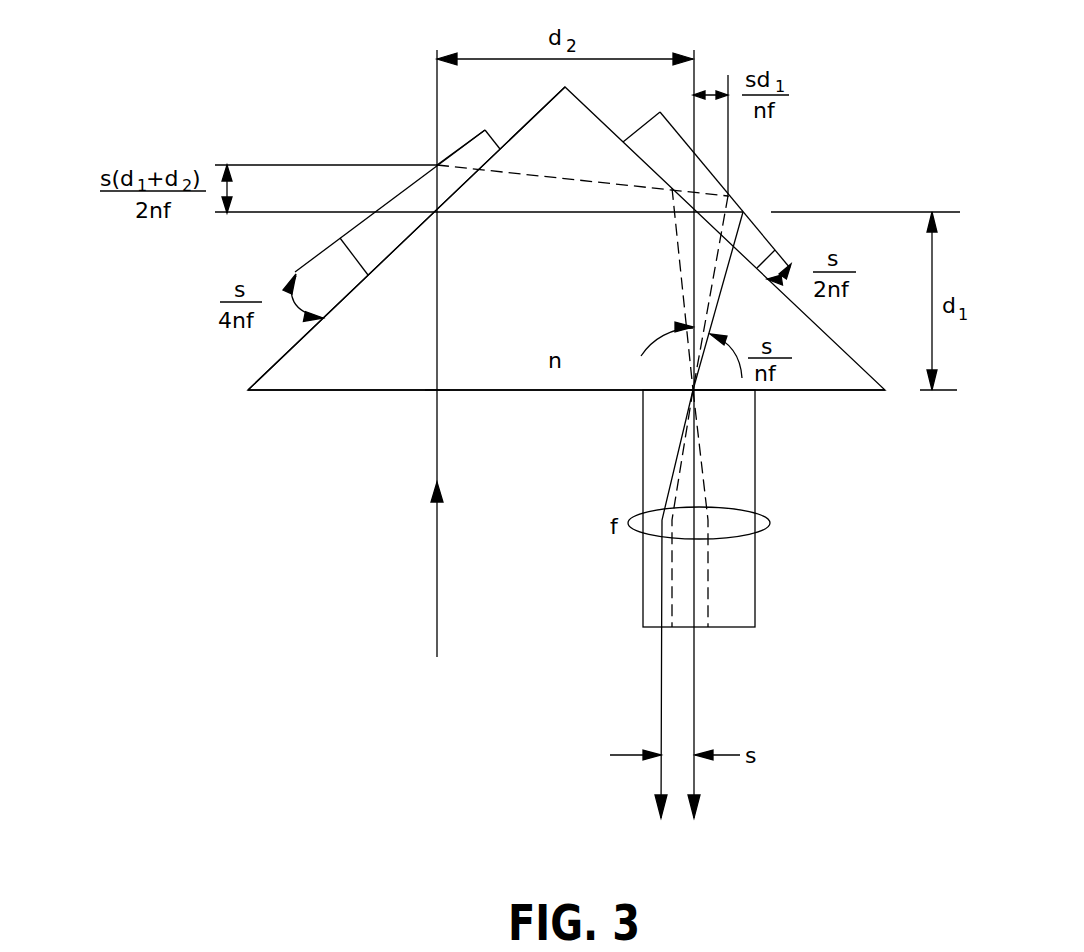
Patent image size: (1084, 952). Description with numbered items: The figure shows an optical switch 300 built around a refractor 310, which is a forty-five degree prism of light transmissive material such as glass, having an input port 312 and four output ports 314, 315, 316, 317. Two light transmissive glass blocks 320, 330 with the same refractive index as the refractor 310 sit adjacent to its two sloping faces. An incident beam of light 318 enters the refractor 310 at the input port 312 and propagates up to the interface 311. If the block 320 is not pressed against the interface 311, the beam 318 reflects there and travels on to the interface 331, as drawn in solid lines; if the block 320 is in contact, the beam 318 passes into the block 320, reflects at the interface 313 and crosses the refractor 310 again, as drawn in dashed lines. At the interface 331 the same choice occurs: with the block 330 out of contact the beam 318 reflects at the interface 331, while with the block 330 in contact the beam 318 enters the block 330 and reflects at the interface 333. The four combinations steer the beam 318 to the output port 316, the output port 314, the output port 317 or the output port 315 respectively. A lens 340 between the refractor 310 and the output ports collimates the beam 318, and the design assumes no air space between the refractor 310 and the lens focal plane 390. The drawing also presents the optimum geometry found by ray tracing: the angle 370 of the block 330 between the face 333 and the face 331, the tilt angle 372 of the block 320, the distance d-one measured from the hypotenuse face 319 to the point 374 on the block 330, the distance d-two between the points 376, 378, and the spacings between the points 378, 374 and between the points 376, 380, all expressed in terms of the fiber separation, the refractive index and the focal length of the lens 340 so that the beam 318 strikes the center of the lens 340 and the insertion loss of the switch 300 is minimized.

The optical switch 300 is at (901, 28).
The refractor 310 is at (277, 382).
The interface 311 is at (393, 252).
The input port 312 is at (432, 391).
The interface 313 is at (340, 237).
The output port 314 is at (661, 631).
The output port 315 is at (670, 632).
The output port 316 is at (695, 632).
The output port 317 is at (707, 631).
The incident beam of light 318 is at (438, 377).
The hypotenuse face 319 is at (510, 392).
The light transmissive glass block 320 is at (472, 148).
The light transmissive glass block 330 is at (655, 147).
The interface 331 is at (757, 260).
The interface 333 is at (767, 243).
The lens 340 is at (771, 523).
The angle 370 is at (785, 290).
The facet tilt angle s/4nf 372 is at (290, 310).
The point 374 is at (743, 212).
The point 376 is at (438, 213).
The point 378 is at (692, 213).
The point 380 is at (437, 165).
The lens focal plane 390 is at (758, 391).